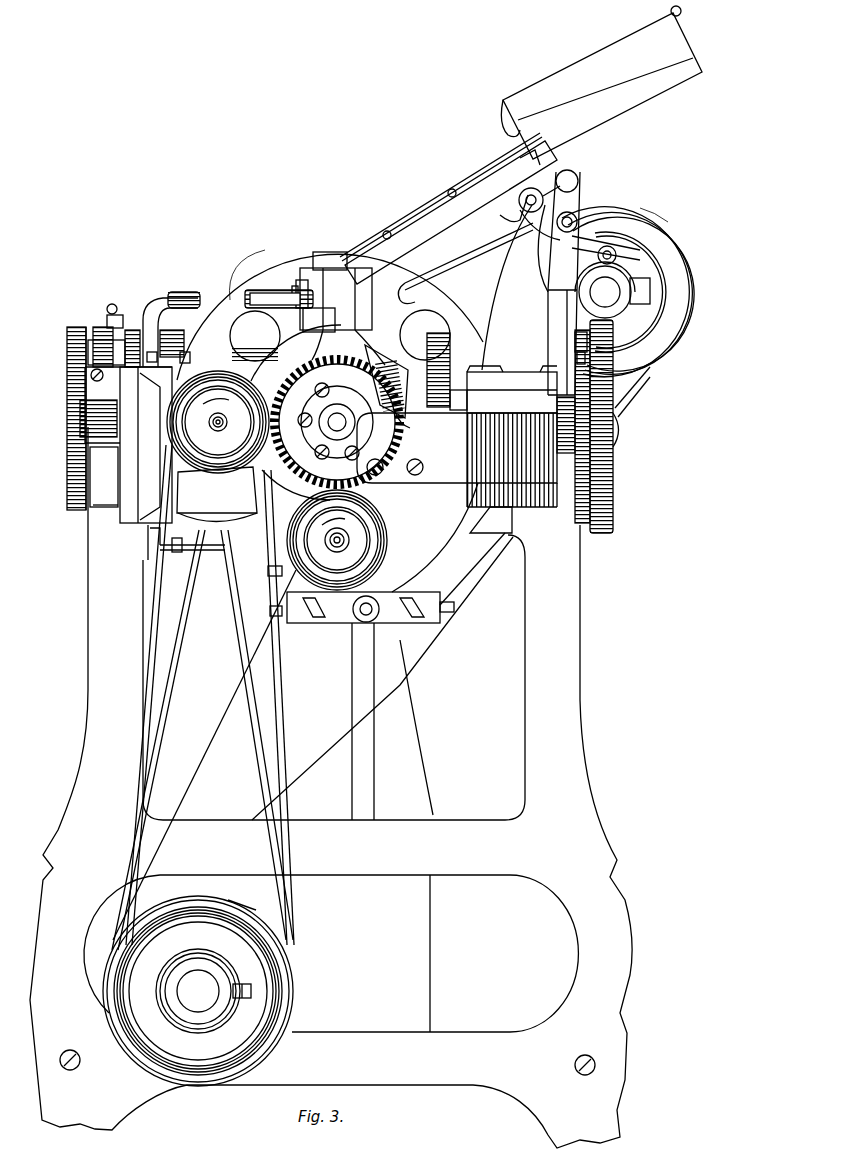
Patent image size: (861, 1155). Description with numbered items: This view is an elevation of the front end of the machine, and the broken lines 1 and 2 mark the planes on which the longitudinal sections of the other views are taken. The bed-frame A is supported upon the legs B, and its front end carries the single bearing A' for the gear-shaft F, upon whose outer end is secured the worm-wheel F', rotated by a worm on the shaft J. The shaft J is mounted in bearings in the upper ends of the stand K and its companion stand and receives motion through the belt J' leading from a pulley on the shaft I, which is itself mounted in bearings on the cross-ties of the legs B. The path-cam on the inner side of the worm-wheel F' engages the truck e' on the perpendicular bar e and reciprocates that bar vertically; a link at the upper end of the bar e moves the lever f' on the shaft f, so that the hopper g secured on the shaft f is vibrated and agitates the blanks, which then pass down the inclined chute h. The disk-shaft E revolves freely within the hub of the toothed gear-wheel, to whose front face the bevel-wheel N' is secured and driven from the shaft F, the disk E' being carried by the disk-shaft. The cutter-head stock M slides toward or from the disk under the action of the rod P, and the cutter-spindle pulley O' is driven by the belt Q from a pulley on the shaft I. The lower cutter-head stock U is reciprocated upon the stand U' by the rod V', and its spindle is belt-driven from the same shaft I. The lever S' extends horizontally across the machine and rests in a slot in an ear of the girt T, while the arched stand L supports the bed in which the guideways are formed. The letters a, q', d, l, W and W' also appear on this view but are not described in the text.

The section line 1 is at (197, 1110).
The section line 2 is at (336, 905).
The legs B is at (331, 787).
The stand U' is at (382, 676).
The belt Q is at (155, 637).
The shaft I is at (198, 991).
The pulley O' is at (218, 422).
The disk E' is at (330, 421).
The bevel-wheel N' is at (337, 422).
The disk-shaft E is at (337, 422).
The bed-frame A is at (318, 445).
The bearing A' is at (512, 391).
The cutter-head stock M is at (146, 375).
The girt T is at (491, 520).
The lever S' is at (199, 542).
The cutter-head stock U is at (361, 594).
The rod V' is at (375, 609).
The rod P is at (114, 377).
The handle a is at (171, 324).
The screw q' is at (177, 357).
The arched stand L is at (346, 316).
The post d is at (330, 260).
The lug l is at (302, 282).
The gear-shaft F is at (612, 426).
The worm-wheel F' is at (605, 426).
The perpendicular bar e is at (564, 283).
The truck e' is at (566, 356).
The stand K is at (515, 287).
The rod W' is at (465, 263).
The rod W is at (606, 248).
The shaft f is at (539, 214).
The lever f' is at (551, 189).
The shaft J is at (612, 290).
The belt J' is at (562, 473).
The inclined chute h is at (451, 212).
The hopper g is at (601, 82).